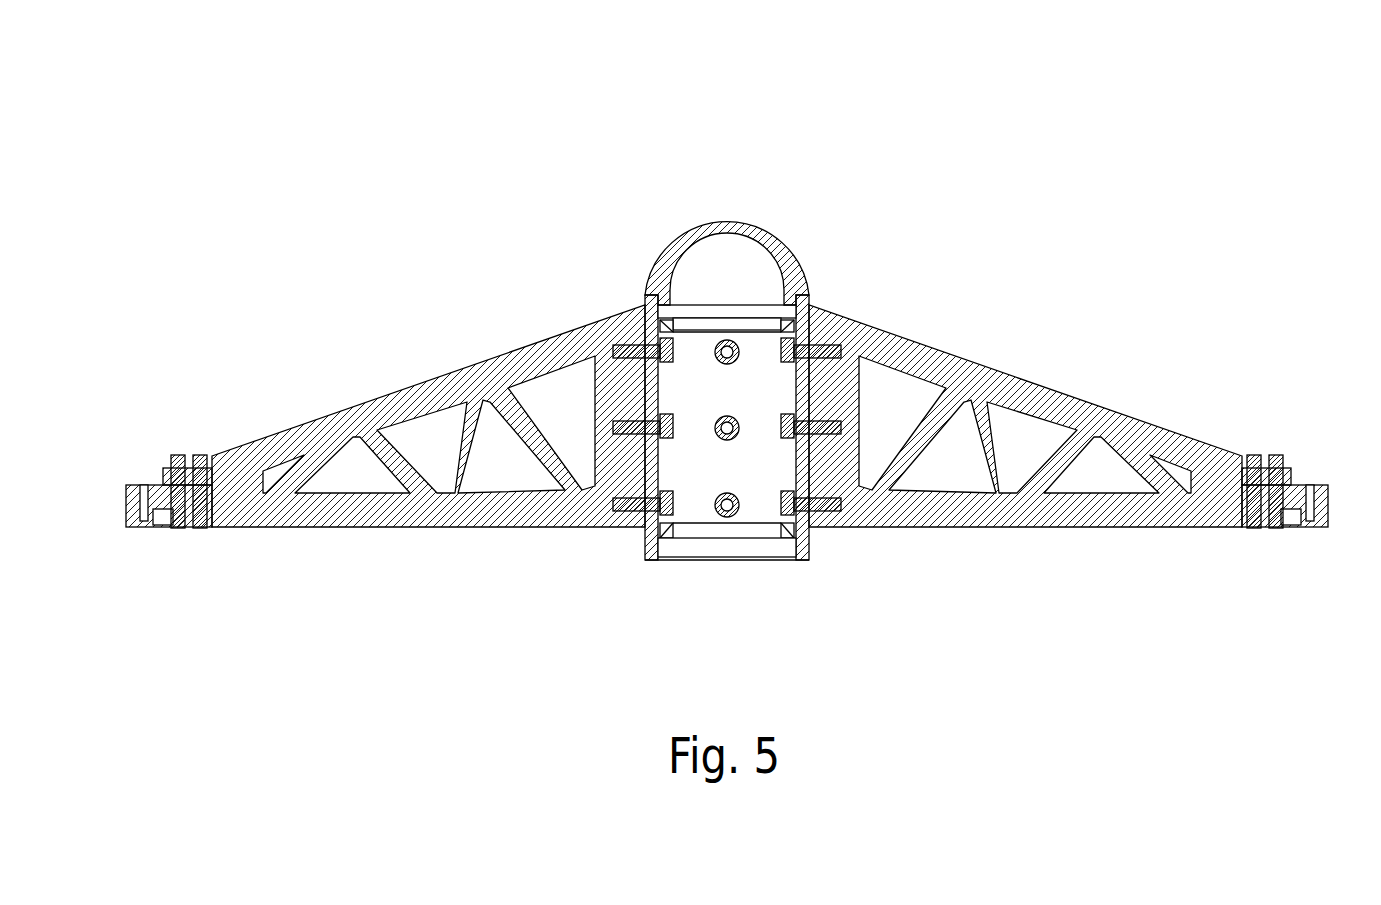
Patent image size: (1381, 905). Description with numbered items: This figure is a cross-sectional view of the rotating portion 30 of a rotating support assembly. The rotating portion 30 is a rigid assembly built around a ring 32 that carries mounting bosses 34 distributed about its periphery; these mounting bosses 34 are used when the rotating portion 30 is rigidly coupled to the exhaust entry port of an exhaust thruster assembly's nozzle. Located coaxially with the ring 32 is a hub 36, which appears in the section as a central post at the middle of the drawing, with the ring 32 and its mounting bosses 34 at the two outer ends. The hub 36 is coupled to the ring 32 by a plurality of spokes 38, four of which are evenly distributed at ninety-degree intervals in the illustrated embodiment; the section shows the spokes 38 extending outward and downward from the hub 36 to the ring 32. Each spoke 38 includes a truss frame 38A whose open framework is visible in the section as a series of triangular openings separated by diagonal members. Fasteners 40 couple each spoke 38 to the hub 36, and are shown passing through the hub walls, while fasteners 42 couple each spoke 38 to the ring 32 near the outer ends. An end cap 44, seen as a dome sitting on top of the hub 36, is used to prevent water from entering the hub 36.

The rotating portion 30 is at (1038, 300).
The ring 32 is at (127, 510).
The mounting bosses 34 is at (135, 485).
The hub 36 is at (643, 532).
The spokes 38 is at (447, 373).
The truss frame 38A is at (538, 453).
The fasteners 40 is at (625, 498).
The fasteners 42 is at (197, 455).
The end cap 44 is at (737, 222).